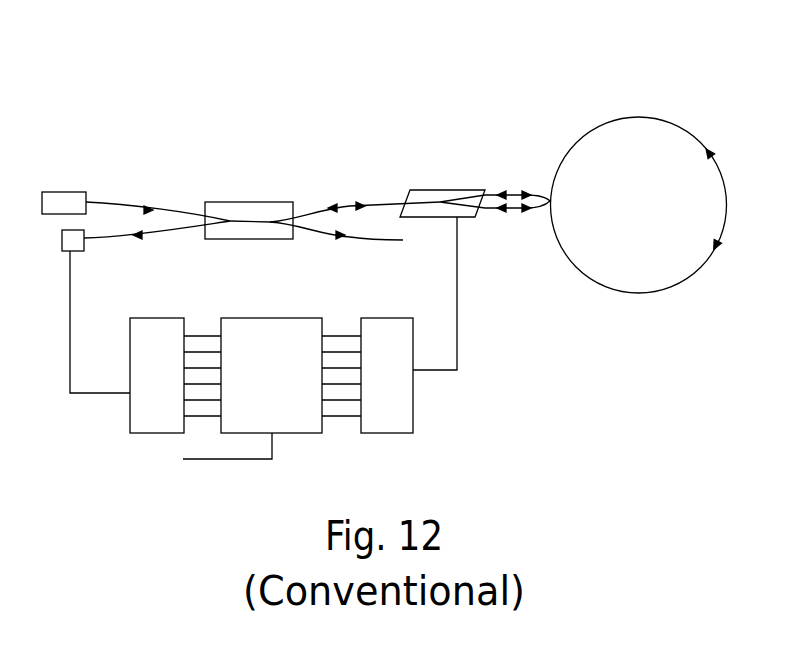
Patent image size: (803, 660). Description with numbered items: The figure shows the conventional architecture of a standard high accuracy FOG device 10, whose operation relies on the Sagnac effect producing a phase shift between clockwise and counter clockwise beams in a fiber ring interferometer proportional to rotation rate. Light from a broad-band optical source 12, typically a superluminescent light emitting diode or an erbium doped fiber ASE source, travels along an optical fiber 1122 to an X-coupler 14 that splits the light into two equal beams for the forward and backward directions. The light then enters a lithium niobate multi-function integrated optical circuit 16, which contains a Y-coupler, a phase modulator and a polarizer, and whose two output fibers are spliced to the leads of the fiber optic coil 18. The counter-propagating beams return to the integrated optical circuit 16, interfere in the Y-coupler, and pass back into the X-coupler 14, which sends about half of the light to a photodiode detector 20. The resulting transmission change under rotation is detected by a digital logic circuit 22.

The FOG device 10 is at (542, 86).
The broad-band optical source 12 is at (50, 192).
The X-coupler 14 is at (250, 202).
The lithium niobate multi-function integrated optical circuit 16 is at (440, 190).
The fiber optic coil 18 is at (618, 117).
The photodiode detector 20 is at (84, 243).
The digital logic circuit 22 is at (302, 433).
The optical fiber 1122 is at (173, 213).